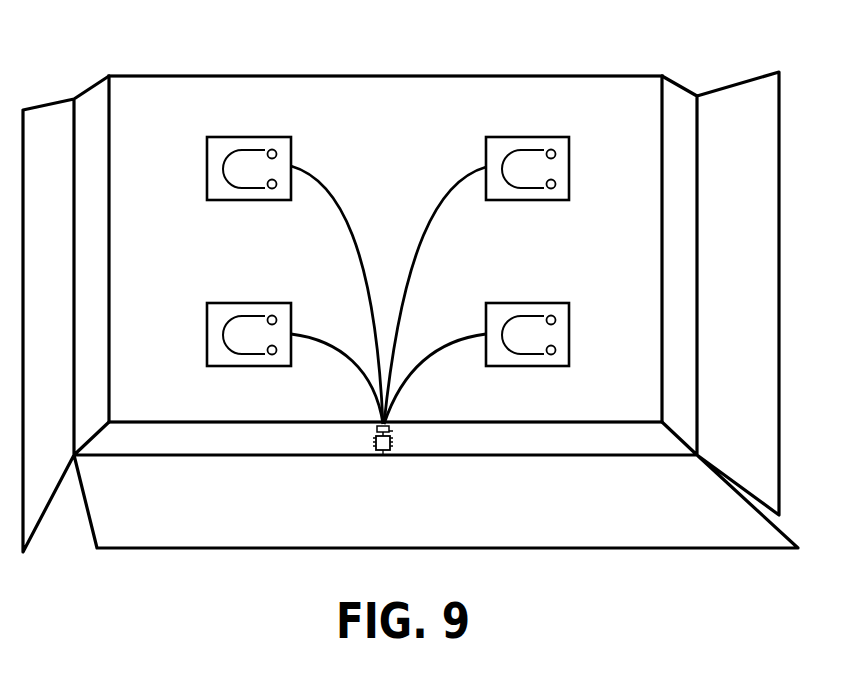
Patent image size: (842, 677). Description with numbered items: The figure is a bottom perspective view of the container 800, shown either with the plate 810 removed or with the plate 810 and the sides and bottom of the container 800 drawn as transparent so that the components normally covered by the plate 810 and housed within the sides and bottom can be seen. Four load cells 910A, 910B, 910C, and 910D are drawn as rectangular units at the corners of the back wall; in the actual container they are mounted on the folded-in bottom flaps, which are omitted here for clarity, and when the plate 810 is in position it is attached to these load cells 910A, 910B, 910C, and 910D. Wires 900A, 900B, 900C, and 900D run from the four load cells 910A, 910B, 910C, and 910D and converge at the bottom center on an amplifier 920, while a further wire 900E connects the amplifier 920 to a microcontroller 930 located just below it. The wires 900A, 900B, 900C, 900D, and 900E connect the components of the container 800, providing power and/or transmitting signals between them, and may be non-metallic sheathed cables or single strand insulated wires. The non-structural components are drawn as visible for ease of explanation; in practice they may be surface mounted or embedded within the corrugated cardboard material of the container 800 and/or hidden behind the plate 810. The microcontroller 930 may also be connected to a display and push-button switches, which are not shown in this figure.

The container 800 is at (157, 75).
The plate 810 is at (362, 128).
The load cell 910A is at (222, 137).
The load cell 910B is at (553, 137).
The load cell 910C is at (553, 303).
The load cell 910D is at (222, 303).
The wire 900A is at (424, 224).
The wire 900B is at (343, 223).
The wire 900C is at (432, 352).
The wire 900D is at (344, 358).
The wire 900E is at (389, 431).
The amplifier 920 is at (377, 429).
The microcontroller 930 is at (382, 455).